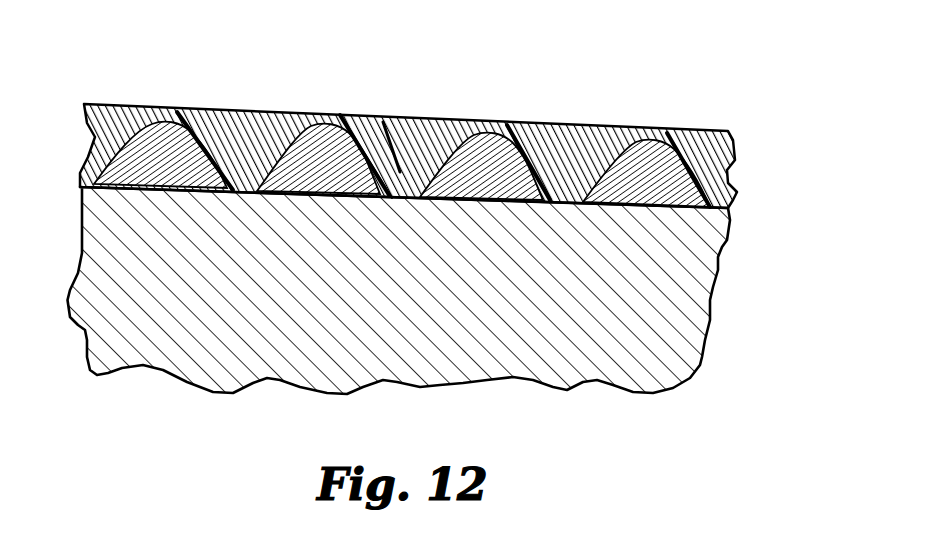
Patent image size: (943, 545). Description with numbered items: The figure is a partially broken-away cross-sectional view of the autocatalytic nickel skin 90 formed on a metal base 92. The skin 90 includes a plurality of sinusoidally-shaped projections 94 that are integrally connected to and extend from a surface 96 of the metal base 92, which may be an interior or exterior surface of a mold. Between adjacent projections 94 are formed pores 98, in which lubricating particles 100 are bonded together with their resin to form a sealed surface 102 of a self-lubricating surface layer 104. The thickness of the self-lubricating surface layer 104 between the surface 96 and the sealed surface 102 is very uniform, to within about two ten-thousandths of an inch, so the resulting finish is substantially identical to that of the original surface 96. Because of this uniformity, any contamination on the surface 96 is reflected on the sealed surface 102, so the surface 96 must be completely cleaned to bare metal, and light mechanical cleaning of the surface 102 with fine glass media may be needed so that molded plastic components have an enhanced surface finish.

The autocatalytic nickel skin 90 is at (274, 113).
The metal base 92 is at (627, 392).
The sinusoidally-shaped projections 94 is at (242, 113).
The surface 96 is at (500, 200).
The pores 98 is at (356, 115).
The lubricating particles 100 is at (380, 118).
The sealed surface 102 is at (418, 118).
The self-lubricating surface layer 104 is at (748, 141).